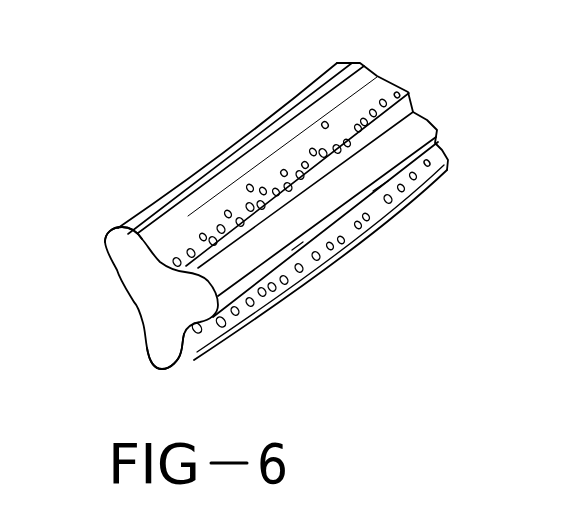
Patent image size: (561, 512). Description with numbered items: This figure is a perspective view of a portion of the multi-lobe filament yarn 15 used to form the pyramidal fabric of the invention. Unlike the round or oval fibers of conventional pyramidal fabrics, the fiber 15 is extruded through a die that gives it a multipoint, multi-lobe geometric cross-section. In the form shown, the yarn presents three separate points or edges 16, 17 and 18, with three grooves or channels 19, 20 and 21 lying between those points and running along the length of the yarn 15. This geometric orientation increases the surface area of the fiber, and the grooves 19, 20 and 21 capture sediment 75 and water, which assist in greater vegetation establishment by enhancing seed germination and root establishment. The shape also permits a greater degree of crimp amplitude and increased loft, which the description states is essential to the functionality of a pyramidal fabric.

The multi-lobe filament yarn 15 is at (253, 202).
The point 16 is at (108, 237).
The point 17 is at (213, 280).
The point 18 is at (163, 369).
The groove 19 is at (163, 265).
The groove 20 is at (203, 352).
The groove 21 is at (137, 302).
The sediment 75 is at (333, 150).